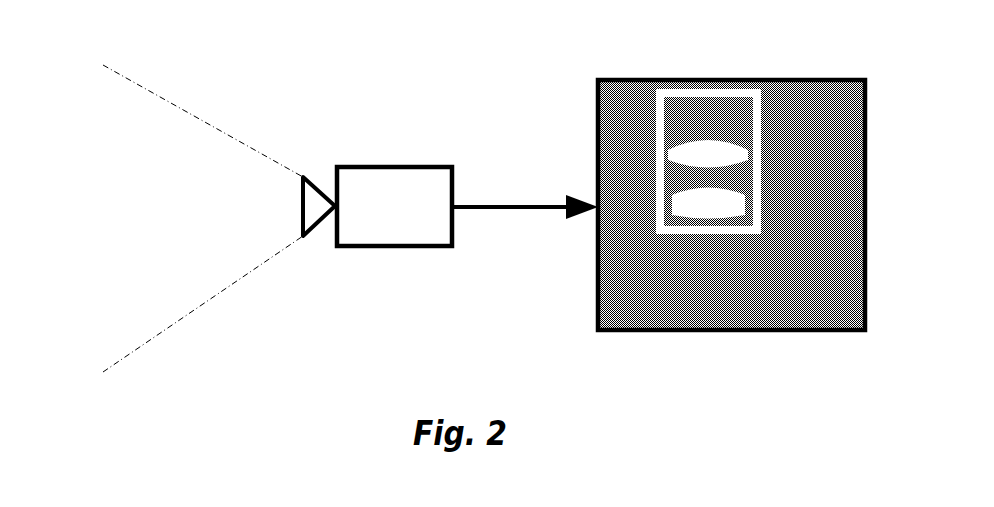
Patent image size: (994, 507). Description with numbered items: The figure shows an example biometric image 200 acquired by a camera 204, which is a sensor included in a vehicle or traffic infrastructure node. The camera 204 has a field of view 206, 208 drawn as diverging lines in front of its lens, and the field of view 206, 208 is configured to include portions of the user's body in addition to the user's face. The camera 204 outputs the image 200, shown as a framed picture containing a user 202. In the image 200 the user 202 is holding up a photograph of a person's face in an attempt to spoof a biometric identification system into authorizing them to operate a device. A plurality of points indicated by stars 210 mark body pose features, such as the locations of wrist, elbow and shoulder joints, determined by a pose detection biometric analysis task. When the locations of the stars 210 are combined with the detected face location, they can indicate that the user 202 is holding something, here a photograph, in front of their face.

The image 200 is at (598, 135).
The user 202 is at (797, 138).
The camera 204 is at (393, 165).
The field of view 206 is at (128, 205).
The field of view 208 is at (760, 117).
The stars 210 is at (833, 227).